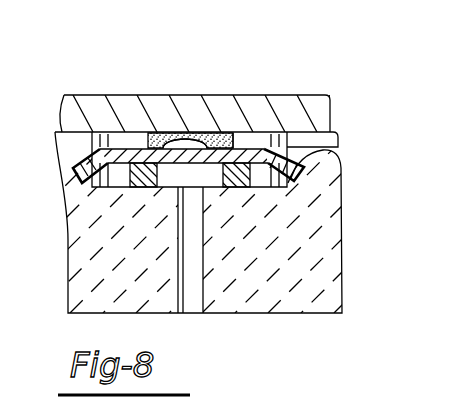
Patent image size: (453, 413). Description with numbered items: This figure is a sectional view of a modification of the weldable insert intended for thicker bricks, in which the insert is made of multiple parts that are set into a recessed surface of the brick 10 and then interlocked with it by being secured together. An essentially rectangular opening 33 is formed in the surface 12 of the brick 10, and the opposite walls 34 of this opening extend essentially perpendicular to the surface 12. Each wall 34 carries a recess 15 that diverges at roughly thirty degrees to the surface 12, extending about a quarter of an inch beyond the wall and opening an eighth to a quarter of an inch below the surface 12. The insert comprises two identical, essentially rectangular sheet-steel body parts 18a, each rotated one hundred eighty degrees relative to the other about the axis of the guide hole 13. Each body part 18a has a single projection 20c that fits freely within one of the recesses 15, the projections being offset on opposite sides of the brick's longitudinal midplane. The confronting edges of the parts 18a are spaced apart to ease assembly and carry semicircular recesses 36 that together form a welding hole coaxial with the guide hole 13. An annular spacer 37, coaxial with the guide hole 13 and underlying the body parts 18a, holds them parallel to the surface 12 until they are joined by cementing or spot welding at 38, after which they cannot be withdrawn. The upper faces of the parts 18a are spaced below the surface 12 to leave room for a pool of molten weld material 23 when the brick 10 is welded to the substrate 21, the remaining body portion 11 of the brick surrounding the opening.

The brick 10 is at (291, 322).
The body 11 is at (243, 313).
The surface 12 is at (327, 125).
The guide hole 13 is at (203, 290).
The recesses 15 is at (333, 153).
The body parts 18a is at (127, 148).
The projection 20c is at (72, 168).
The substrate 21 is at (222, 100).
The molten weld material 23 is at (162, 135).
The rectangular opening 33 is at (258, 140).
The walls 34 is at (287, 145).
The semicircular recesses 36 is at (177, 155).
The annular spacer 37 is at (124, 163).
The spot welding 38 is at (197, 137).